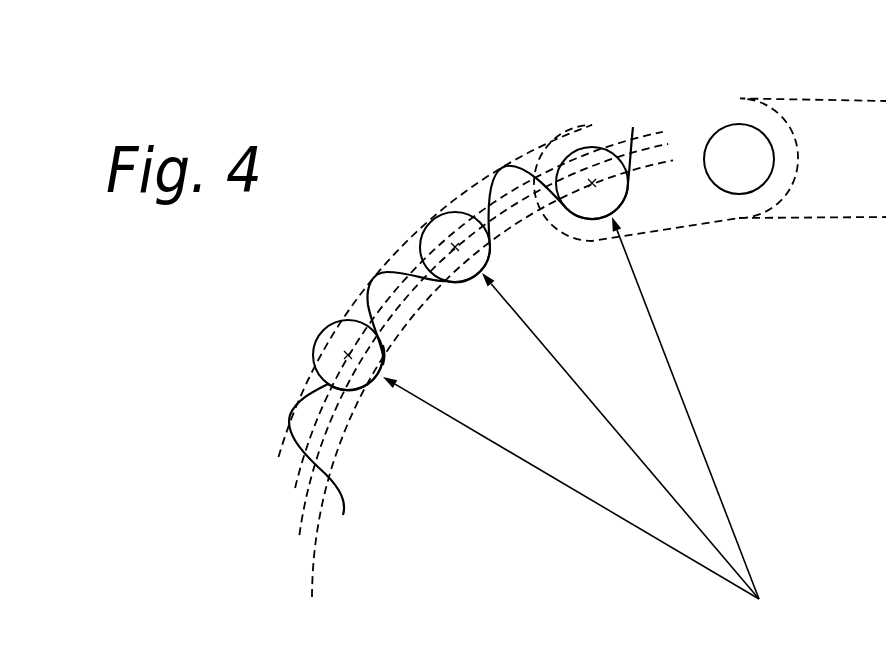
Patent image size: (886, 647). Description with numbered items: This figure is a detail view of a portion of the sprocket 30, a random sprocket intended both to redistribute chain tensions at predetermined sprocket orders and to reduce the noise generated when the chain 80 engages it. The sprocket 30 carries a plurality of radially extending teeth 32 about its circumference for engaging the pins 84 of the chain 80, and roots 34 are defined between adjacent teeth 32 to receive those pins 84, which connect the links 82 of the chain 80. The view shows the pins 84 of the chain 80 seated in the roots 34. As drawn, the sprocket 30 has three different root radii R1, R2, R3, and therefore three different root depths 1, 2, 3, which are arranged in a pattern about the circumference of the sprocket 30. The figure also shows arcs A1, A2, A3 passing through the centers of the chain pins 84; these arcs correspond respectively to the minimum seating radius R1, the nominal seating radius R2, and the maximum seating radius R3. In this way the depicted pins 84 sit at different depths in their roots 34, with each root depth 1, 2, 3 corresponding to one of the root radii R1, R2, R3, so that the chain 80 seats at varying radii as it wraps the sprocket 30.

The chain 80 is at (787, 92).
The links 82 is at (733, 100).
The pins 84 is at (723, 125).
The sprocket 30 is at (562, 612).
The teeth 32 is at (370, 280).
The roots 34 is at (387, 367).
The root depth 1 is at (592, 160).
The root depth 2 is at (452, 238).
The root depth 3 is at (339, 355).
The root radius R1 is at (648, 310).
The root radius R2 is at (563, 372).
The root radius R3 is at (472, 440).
The arc A1 is at (485, 393).
The arc A2 is at (472, 358).
The arc A3 is at (468, 324).